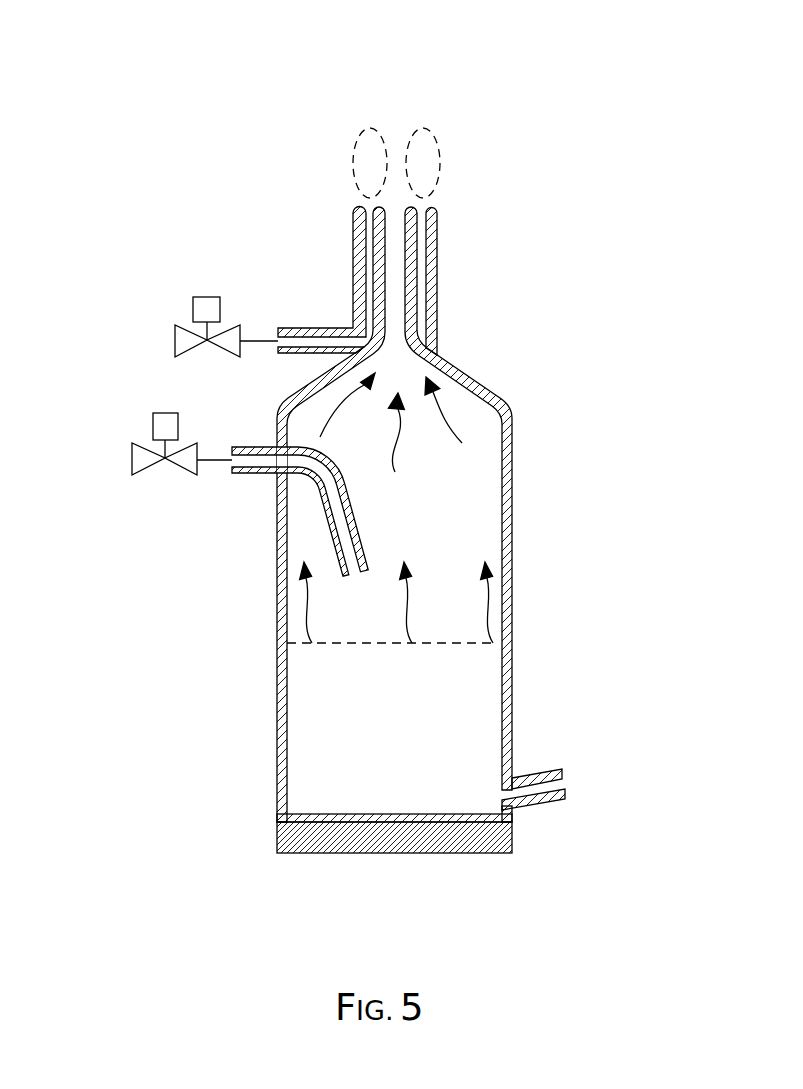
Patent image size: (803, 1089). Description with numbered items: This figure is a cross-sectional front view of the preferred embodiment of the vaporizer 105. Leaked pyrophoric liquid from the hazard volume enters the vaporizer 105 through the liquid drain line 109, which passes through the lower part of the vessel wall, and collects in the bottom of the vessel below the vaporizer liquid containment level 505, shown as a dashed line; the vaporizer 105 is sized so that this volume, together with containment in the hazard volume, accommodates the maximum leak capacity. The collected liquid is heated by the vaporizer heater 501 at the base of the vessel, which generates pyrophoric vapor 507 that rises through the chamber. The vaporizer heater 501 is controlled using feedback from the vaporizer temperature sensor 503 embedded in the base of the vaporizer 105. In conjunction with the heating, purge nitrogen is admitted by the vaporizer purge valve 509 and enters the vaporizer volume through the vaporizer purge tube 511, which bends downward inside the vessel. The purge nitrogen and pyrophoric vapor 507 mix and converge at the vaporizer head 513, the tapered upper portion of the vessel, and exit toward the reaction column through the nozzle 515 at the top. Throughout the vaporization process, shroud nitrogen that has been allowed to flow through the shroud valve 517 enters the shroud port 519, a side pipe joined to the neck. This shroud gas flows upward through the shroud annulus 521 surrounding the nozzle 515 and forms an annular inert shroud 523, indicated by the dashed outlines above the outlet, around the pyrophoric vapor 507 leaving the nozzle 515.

The vaporizer 105 is at (146, 54).
The liquid drain line 109 is at (550, 800).
The vaporizer heater 501 is at (318, 852).
The vaporizer temperature sensor 503 is at (308, 815).
The vaporizer liquid containment level 505 is at (310, 644).
The pyrophoric vapor 507 is at (485, 620).
The vaporizer purge valve 509 is at (153, 418).
The vaporizer purge tube 511 is at (257, 474).
The vaporizer head 513 is at (448, 427).
The nozzle 515 is at (383, 312).
The shroud valve 517 is at (193, 305).
The shroud port 519 is at (293, 353).
The shroud annulus 521 is at (355, 232).
The annular inert shroud 523 is at (358, 141).